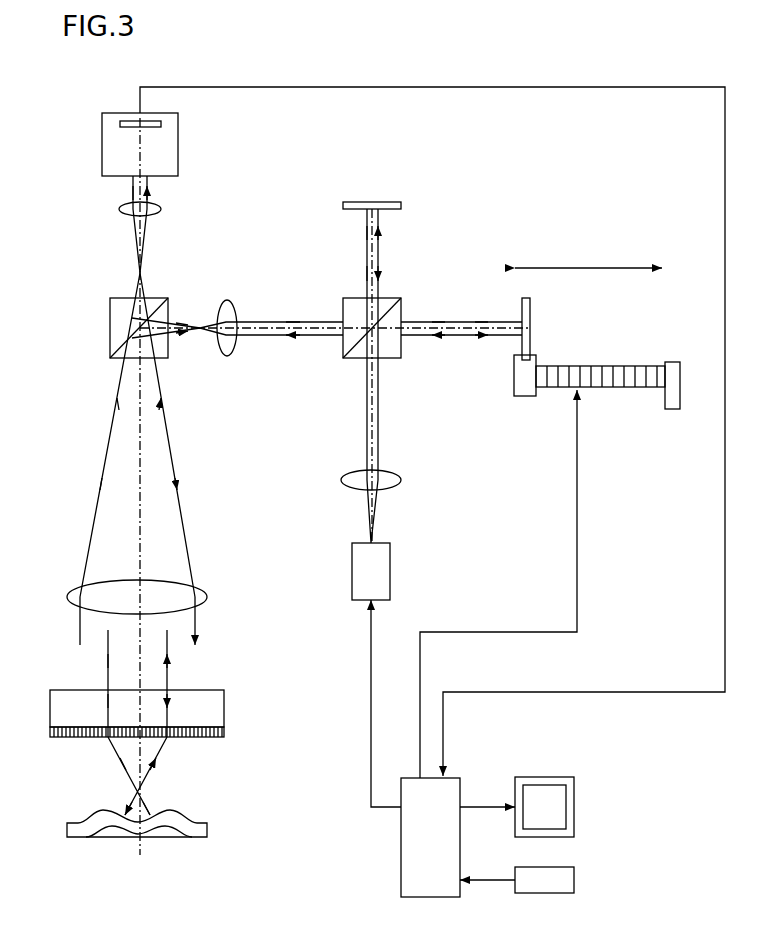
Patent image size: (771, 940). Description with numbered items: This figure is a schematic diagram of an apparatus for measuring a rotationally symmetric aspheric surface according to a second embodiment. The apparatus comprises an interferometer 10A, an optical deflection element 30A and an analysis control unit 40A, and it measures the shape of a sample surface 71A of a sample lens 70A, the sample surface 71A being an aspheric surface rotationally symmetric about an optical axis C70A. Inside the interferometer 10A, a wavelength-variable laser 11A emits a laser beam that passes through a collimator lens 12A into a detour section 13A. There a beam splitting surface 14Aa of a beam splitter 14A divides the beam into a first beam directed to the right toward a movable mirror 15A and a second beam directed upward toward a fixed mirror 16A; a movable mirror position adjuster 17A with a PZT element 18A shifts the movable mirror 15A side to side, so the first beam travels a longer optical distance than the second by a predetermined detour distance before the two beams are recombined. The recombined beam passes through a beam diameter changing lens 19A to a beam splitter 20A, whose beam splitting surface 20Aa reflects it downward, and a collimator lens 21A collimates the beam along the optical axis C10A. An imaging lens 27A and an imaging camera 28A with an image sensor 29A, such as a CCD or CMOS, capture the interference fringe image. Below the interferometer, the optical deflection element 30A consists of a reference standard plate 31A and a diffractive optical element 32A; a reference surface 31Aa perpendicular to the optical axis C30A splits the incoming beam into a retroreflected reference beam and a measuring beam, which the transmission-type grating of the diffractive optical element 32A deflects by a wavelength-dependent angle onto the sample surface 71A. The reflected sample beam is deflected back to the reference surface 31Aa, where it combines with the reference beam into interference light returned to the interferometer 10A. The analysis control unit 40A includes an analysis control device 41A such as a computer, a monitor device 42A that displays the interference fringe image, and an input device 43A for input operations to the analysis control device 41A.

The interferometer 10A is at (444, 62).
The wavelength-variable laser 11A is at (390, 570).
The collimator lens 12A is at (401, 478).
The detour section 13A is at (490, 330).
The beam splitter 14A is at (397, 296).
The beam splitting surface 14Aa is at (355, 352).
The movable mirror 15A is at (530, 298).
The fixed mirror 16A is at (401, 205).
The movable mirror position adjuster 17A is at (598, 362).
The PZT element 18A is at (615, 388).
The beam diameter changing lens 19A is at (232, 300).
The beam splitter 20A is at (165, 300).
The beam splitting surface 20Aa is at (122, 356).
The collimator lens 21A is at (207, 597).
The imaging lens 27A is at (160, 207).
The imaging camera 28A is at (178, 150).
The image sensor 29A is at (120, 124).
The optical deflection element 30A is at (176, 699).
The reference standard plate 31A is at (224, 703).
The reference surface 31Aa is at (188, 727).
The diffractive optical element 32A is at (224, 736).
The analysis control unit 40A is at (492, 817).
The analysis control device 41A is at (401, 858).
The monitor device 42A is at (556, 777).
The input device 43A is at (574, 880).
The sample lens 70A is at (170, 803).
The sample surface 71A is at (192, 812).
The optical axis C10A is at (140, 555).
The optical axis C30A is at (138, 675).
The optical axis C70A is at (140, 850).